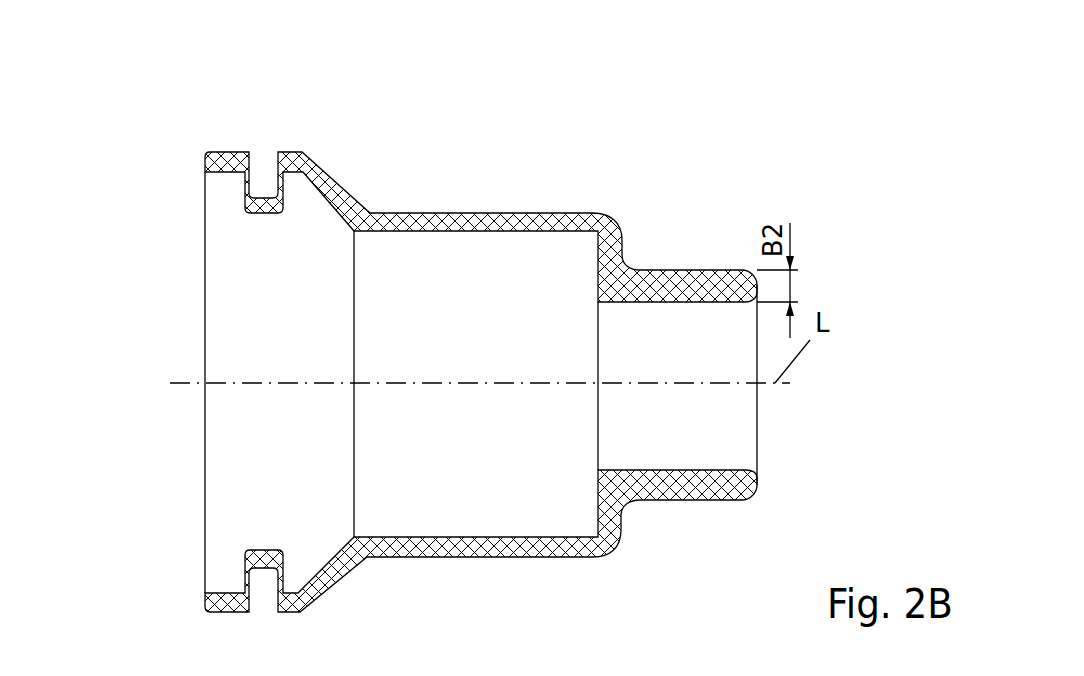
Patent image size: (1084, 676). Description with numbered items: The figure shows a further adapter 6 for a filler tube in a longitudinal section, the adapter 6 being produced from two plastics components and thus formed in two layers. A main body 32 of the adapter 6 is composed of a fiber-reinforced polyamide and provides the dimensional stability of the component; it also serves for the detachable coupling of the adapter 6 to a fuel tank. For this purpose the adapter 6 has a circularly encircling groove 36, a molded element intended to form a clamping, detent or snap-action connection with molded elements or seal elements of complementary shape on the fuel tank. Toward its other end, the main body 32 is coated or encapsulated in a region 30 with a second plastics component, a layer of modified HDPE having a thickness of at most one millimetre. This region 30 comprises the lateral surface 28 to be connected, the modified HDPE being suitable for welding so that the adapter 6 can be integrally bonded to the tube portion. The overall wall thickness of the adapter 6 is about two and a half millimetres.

The adapter 6 is at (128, 112).
The lateral surface 28 is at (700, 270).
The region 30 is at (615, 237).
The main body 32 is at (457, 215).
The groove 36 is at (253, 197).